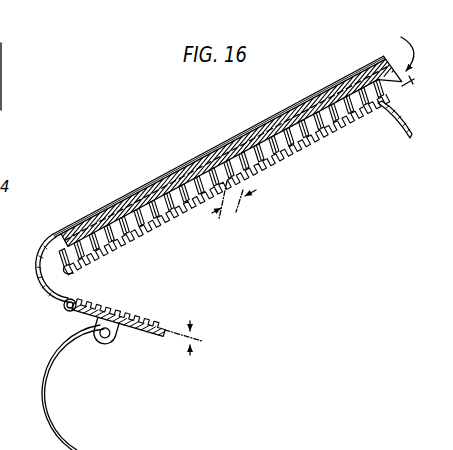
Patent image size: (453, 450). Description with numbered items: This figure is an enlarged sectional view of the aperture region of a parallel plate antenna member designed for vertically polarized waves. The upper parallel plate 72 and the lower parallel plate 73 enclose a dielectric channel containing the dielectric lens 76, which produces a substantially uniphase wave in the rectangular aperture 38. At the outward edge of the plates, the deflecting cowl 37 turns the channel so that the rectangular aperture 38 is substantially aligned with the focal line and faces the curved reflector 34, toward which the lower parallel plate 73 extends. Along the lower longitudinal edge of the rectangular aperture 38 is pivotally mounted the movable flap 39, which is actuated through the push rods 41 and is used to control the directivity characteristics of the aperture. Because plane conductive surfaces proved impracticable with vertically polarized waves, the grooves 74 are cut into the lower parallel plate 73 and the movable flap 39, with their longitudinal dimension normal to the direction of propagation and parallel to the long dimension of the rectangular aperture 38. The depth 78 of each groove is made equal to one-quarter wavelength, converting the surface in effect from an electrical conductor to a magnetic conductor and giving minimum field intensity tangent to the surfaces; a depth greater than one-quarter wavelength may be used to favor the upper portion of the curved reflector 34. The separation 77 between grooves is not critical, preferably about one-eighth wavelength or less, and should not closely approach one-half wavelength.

The parallel plate 72 is at (195, 157).
The dielectric lens 76 is at (256, 127).
The lower parallel plate 73 is at (154, 213).
The grooves 74 is at (192, 213).
The separation between grooves 77 is at (238, 209).
The depth of the groove 78 is at (197, 338).
The curved reflector 34 is at (403, 127).
The deflecting cowl 37 is at (43, 295).
The rectangular aperture 38 is at (70, 277).
The movable flap 39 is at (129, 331).
The push rods 41 is at (73, 447).